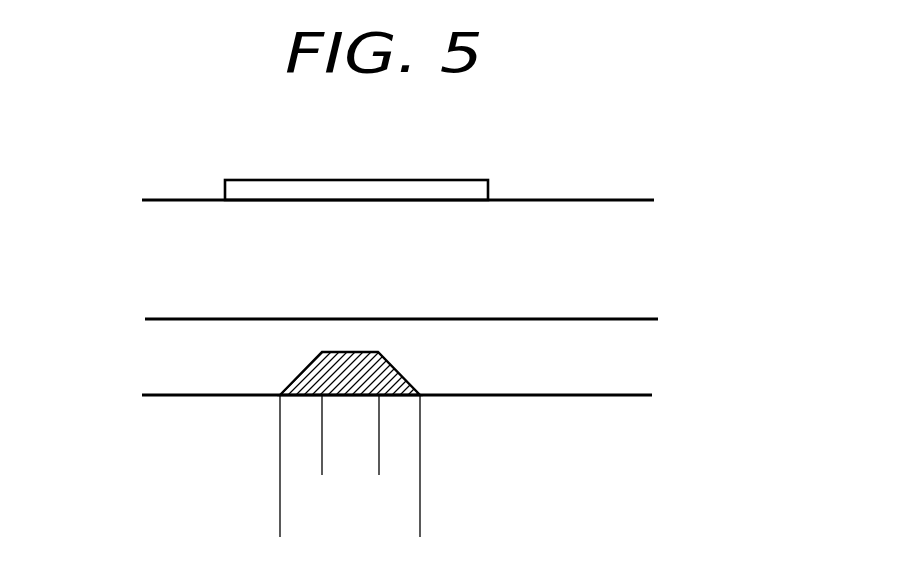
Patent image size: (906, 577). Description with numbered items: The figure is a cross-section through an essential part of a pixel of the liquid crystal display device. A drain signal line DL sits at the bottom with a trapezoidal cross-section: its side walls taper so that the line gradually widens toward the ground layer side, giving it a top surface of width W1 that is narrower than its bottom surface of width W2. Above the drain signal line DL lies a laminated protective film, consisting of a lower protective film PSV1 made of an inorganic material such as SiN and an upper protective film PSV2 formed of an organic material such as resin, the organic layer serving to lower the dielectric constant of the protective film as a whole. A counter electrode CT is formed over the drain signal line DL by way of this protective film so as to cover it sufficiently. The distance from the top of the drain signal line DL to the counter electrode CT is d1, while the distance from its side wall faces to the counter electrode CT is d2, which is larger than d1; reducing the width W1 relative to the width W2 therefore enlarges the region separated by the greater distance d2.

The counter electrode CT is at (467, 188).
The protective film PSV2 is at (613, 260).
The protective film PSV1 is at (602, 362).
The drain signal line DL is at (302, 383).
The distance from top portion of drain signal line to counter electrode d1 is at (376, 205).
The distance from side wall faces of drain signal line to counter electrode d2 is at (417, 395).
The width of top surface W1 is at (379, 461).
The width of bottom surface W2 is at (280, 522).